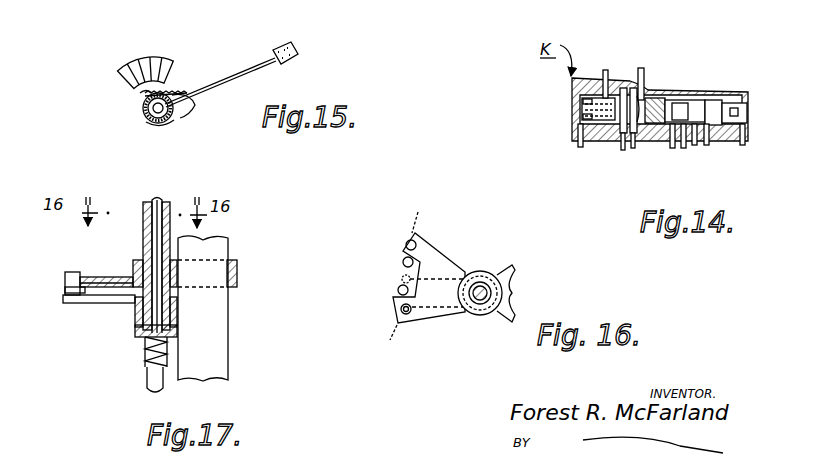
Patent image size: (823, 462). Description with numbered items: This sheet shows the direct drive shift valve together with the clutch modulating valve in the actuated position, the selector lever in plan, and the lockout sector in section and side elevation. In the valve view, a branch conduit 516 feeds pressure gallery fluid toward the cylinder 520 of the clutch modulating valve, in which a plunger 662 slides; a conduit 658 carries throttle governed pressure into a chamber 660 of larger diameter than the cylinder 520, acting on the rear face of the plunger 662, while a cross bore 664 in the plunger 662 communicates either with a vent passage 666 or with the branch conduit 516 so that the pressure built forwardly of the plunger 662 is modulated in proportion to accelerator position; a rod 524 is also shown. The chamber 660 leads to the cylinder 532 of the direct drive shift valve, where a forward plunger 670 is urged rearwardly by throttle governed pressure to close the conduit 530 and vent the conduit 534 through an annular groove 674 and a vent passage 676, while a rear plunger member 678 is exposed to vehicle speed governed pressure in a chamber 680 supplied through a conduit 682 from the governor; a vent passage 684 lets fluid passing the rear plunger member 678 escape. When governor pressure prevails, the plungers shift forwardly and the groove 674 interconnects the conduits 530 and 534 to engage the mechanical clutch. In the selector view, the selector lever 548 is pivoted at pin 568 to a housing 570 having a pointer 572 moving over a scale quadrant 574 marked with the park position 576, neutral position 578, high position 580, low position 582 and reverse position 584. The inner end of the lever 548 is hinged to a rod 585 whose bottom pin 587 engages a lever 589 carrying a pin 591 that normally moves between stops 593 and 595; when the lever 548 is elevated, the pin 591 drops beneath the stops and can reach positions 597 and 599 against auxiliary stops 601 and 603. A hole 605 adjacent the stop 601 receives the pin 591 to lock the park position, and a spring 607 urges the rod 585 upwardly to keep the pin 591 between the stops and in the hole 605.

In FIG. 14, the branch conduit 516 is at (607, 72).
In FIG. 14, the cylinder 520 is at (575, 85).
In FIG. 14, the rod 524 is at (581, 143).
In FIG. 14, the conduit 530 is at (673, 148).
In FIG. 14, the cylinder 532 is at (637, 137).
In FIG. 17, the cylinder 532 is at (145, 223).
In FIG. 14, the conduit 534 is at (684, 148).
In FIG. 15, the selector lever 548 is at (300, 63).
In FIG. 15, the pivot pin 568 is at (190, 107).
In FIG. 15, the housing 570 is at (167, 117).
In FIG. 15, the pointer 572 is at (140, 93).
In FIG. 15, the scale quadrant 574 is at (173, 68).
In FIG. 15, the park position 576 is at (120, 78).
In FIG. 15, the neutral position 578 is at (130, 67).
In FIG. 15, the high position 580 is at (140, 60).
In FIG. 15, the low position 582 is at (150, 58).
In FIG. 15, the reverse position 584 is at (162, 57).
In FIG. 15, the rod 585 is at (155, 122).
In FIG. 17, the rod 585 is at (160, 200).
In FIG. 16, the rod 585 is at (486, 282).
In FIG. 17, the pin 587 is at (137, 327).
In FIG. 17, the lever 589 is at (92, 303).
In FIG. 17, the pin 591 is at (72, 272).
In FIG. 16, the pin 591 is at (401, 285).
In FIG. 16, the stop 593 is at (398, 290).
In FIG. 16, the stop 595 is at (403, 259).
In FIG. 16, the position 597 is at (396, 318).
In FIG. 16, the position 599 is at (406, 241).
In FIG. 16, the auxiliary stop 601 is at (374, 341).
In FIG. 17, the auxiliary stop 603 is at (67, 288).
In FIG. 16, the auxiliary stop 603 is at (400, 215).
In FIG. 16, the hole 605 is at (400, 308).
In FIG. 17, the spring 607 is at (145, 347).
In FIG. 14, the conduit 658 is at (642, 72).
In FIG. 14, the chamber 660 is at (655, 94).
In FIG. 14, the plunger 662 is at (628, 136).
In FIG. 14, the cross bore 664 is at (582, 111).
In FIG. 14, the vent passage 666 is at (622, 148).
In FIG. 14, the forward plunger 670 is at (653, 102).
In FIG. 14, the annular groove 674 is at (685, 106).
In FIG. 14, the vent passage 676 is at (703, 146).
In FIG. 14, the rear plunger member 678 is at (713, 102).
In FIG. 14, the chamber 680 is at (745, 112).
In FIG. 14, the conduit 682 is at (745, 138).
In FIG. 14, the vent passage 684 is at (706, 145).